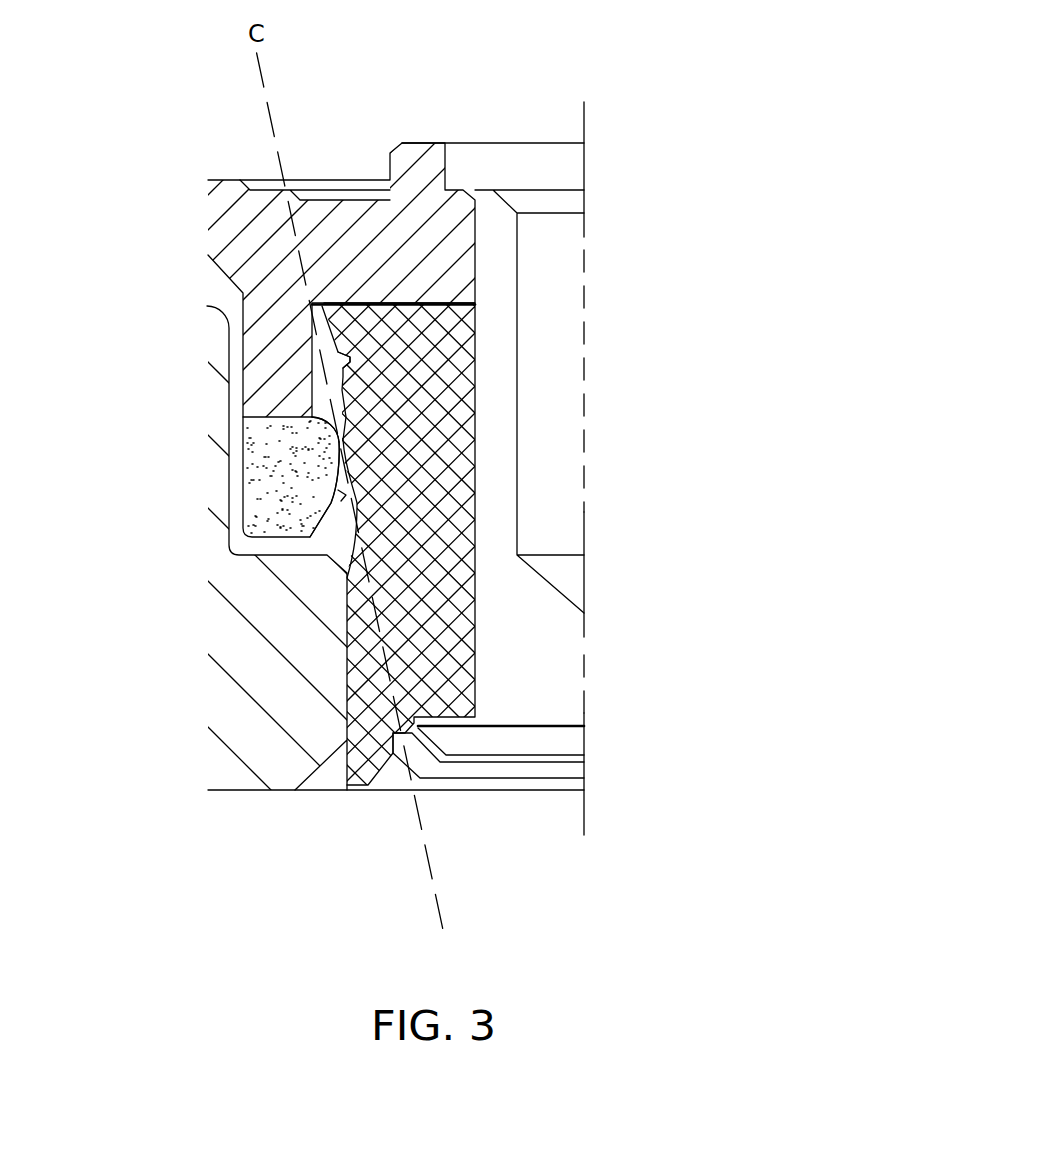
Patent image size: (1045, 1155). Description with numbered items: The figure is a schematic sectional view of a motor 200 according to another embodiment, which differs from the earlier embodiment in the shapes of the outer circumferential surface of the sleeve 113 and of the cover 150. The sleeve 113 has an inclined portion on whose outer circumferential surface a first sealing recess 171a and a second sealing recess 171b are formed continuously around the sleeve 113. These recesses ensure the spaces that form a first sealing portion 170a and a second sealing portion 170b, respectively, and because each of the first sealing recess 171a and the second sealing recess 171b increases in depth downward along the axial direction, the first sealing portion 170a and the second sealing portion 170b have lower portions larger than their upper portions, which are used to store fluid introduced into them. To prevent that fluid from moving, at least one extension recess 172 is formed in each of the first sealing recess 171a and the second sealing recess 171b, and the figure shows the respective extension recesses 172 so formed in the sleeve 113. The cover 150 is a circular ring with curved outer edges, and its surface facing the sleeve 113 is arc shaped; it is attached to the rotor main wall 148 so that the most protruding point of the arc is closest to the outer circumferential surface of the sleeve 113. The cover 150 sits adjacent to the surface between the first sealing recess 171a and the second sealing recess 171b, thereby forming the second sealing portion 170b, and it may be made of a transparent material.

The motor 200 is at (667, 147).
The rotor main wall 148 is at (276, 355).
The cover 150 is at (278, 473).
The sleeve 113 is at (452, 663).
The first sealing recess 171a is at (350, 385).
The second sealing recess 171b is at (360, 576).
The extension recess 172 is at (348, 356).
The first sealing portion 170a is at (327, 397).
The second sealing portion 170b is at (339, 502).